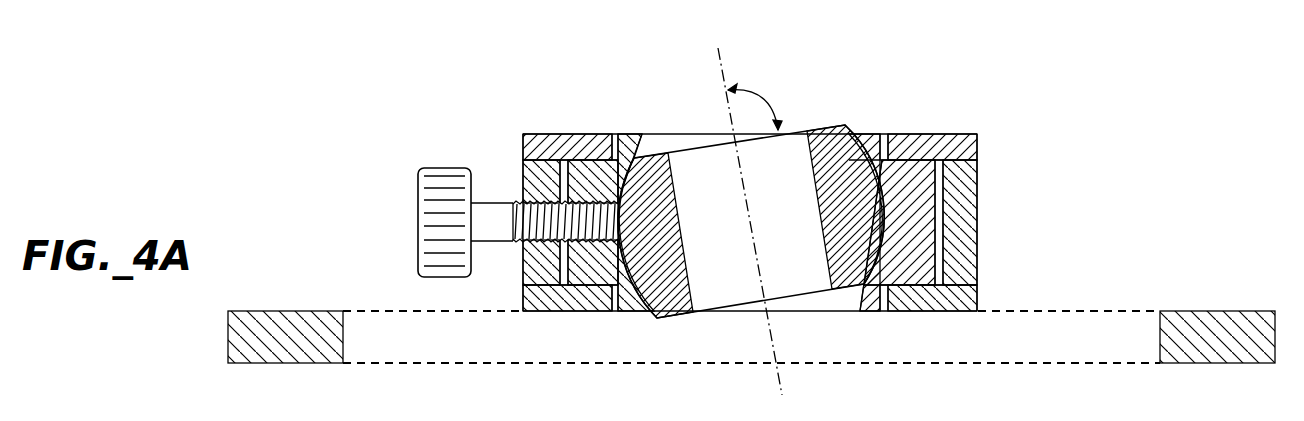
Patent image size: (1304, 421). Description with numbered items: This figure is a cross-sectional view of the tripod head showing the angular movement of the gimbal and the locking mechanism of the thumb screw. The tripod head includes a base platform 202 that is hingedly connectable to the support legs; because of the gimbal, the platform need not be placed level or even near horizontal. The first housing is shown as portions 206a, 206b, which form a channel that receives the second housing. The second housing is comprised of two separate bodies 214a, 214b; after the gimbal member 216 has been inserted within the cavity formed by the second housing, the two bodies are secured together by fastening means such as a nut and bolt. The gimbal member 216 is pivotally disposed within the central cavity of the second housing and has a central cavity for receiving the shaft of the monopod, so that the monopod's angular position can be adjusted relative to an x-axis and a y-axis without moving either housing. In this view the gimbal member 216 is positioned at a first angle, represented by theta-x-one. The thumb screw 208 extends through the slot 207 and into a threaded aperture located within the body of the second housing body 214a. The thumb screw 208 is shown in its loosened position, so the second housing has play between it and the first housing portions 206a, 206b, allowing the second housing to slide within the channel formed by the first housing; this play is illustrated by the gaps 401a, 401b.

The base platform 202 is at (327, 365).
The first housing 206a is at (553, 133).
The first housing 206b is at (980, 197).
The slot 207 is at (523, 177).
The thumb screw 208 is at (432, 227).
The second housing body 214a is at (630, 133).
The second housing body 214b is at (867, 134).
The gimbal member 216 is at (614, 312).
The gap 401a is at (562, 266).
The gap 401b is at (937, 268).